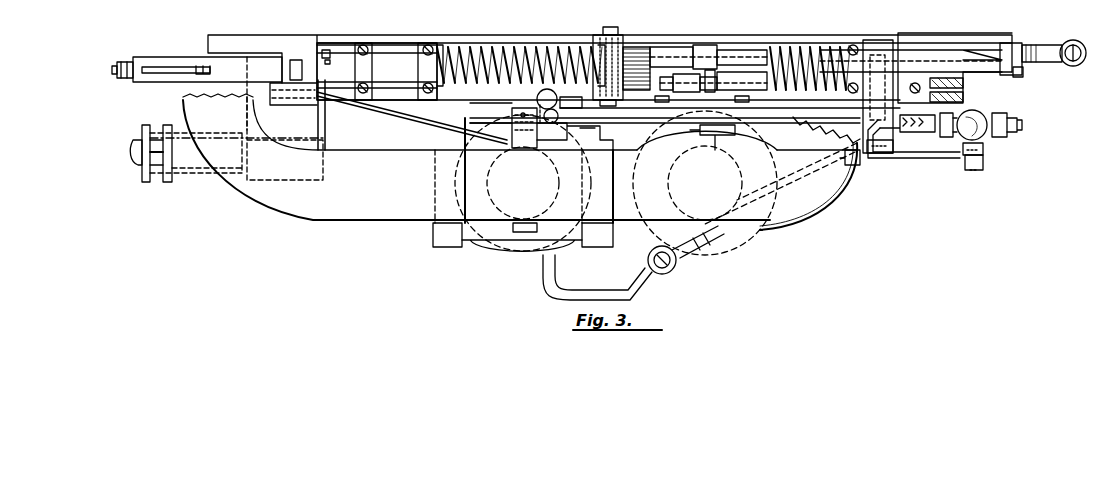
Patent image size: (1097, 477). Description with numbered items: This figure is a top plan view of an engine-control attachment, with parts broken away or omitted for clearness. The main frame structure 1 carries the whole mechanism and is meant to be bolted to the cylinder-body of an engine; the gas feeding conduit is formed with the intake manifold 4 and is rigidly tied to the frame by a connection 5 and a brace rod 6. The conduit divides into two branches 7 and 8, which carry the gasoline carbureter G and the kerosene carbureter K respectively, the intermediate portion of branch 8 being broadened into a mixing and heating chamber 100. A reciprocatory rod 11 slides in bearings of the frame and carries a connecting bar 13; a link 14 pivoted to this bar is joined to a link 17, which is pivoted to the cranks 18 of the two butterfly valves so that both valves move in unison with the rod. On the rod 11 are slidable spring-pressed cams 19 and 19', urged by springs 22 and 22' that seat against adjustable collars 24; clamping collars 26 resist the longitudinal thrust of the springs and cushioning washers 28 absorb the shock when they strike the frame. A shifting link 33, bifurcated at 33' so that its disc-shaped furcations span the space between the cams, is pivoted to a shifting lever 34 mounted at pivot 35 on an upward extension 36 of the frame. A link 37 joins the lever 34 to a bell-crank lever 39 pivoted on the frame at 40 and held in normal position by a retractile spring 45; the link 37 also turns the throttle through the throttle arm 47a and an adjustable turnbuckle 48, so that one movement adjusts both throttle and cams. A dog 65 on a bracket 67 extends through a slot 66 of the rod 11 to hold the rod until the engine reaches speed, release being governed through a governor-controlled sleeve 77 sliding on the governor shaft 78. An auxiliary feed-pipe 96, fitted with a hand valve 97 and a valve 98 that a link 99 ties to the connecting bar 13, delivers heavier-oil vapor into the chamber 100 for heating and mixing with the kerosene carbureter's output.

The main frame structure 1 is at (285, 45).
The intake manifold 4 is at (503, 151).
The connection 5 is at (505, 112).
The brace rod 6 is at (417, 122).
The branch 7 is at (787, 213).
The branch 8 is at (490, 188).
The reciprocatory rod 11 is at (186, 80).
The connecting bar 13 is at (885, 40).
The link 14 is at (812, 113).
The link 17 is at (613, 125).
The cranks 18 is at (736, 128).
The spring-pressed cam 19 is at (757, 98).
The spring-pressed cam 19' is at (678, 98).
The spring 22 is at (814, 54).
The spring 22' is at (521, 49).
The collar 24 is at (423, 71).
The clamping collar 26 is at (368, 63).
The cushioning washer 28 is at (357, 71).
The shifting link 33 is at (707, 52).
The bifurcation 33' is at (726, 52).
The shifting lever 34 is at (638, 47).
The pivot 35 is at (609, 27).
The upward extension 36 is at (443, 42).
The link 37 is at (938, 62).
The bell-crank lever 39 is at (1037, 27).
The pivot 40 is at (1015, 72).
The retractile spring 45 is at (1073, 67).
The arm 47a is at (513, 78).
The turnbuckle 48 is at (583, 98).
The dog 65 is at (198, 67).
The slot 66 is at (158, 67).
The bracket 67 is at (124, 62).
The governor-controlled sleeve 77 is at (192, 163).
The governor shaft 78 is at (135, 143).
The feed-pipe 96 is at (857, 162).
The valve 97 is at (676, 266).
The valve 98 is at (990, 135).
The link 99 is at (950, 158).
The mixing and heating chamber 100 is at (500, 247).
The kerosene carbureter K is at (517, 250).
The gasoline carbureter G is at (705, 249).